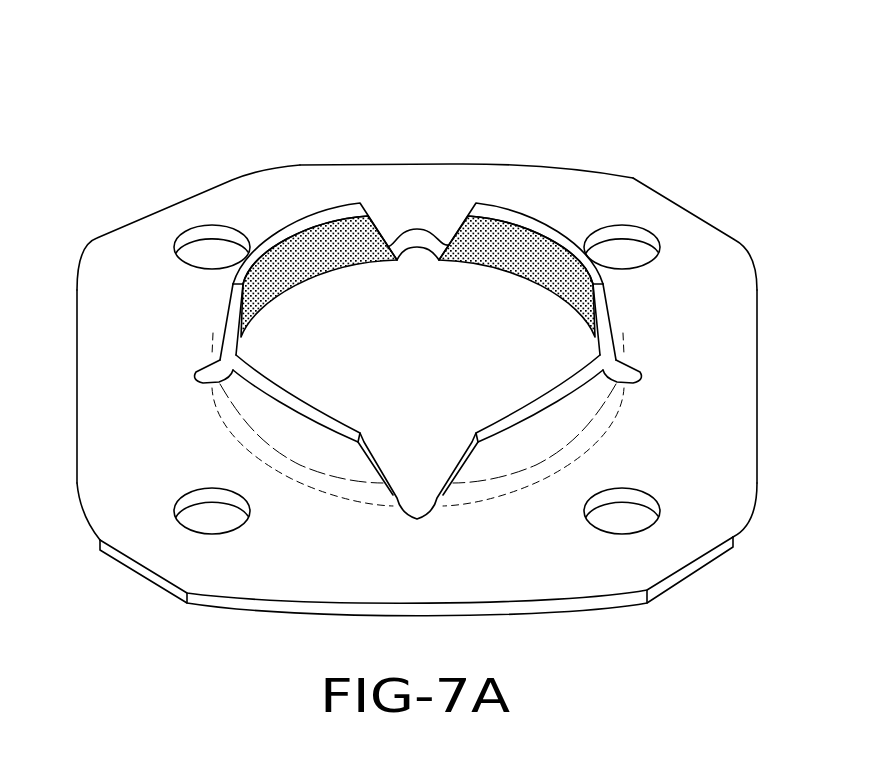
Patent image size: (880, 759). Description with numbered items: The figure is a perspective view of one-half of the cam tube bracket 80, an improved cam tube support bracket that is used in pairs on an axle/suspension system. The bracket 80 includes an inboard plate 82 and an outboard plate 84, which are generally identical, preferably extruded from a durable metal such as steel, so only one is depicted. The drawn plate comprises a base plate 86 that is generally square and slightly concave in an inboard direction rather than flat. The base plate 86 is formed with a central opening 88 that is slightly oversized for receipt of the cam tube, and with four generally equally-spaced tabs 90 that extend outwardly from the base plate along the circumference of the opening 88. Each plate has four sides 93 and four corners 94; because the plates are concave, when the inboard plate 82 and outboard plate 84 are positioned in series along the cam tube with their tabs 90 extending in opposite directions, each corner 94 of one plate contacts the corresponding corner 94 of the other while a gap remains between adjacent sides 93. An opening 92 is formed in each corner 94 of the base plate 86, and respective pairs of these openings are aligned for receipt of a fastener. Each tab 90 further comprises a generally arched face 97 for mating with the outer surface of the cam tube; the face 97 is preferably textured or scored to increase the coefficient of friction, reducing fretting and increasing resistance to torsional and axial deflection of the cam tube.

The cam tube bracket 80 is at (126, 104).
The inboard plate 82 is at (316, 158).
The outboard plate 84 is at (416, 576).
The base plate 86 is at (493, 165).
The opening 88 is at (262, 318).
The tabs 90 is at (292, 232).
The opening 92 is at (193, 237).
The sides 93 is at (397, 190).
The corners 94 is at (130, 243).
The arched face 97 is at (307, 253).